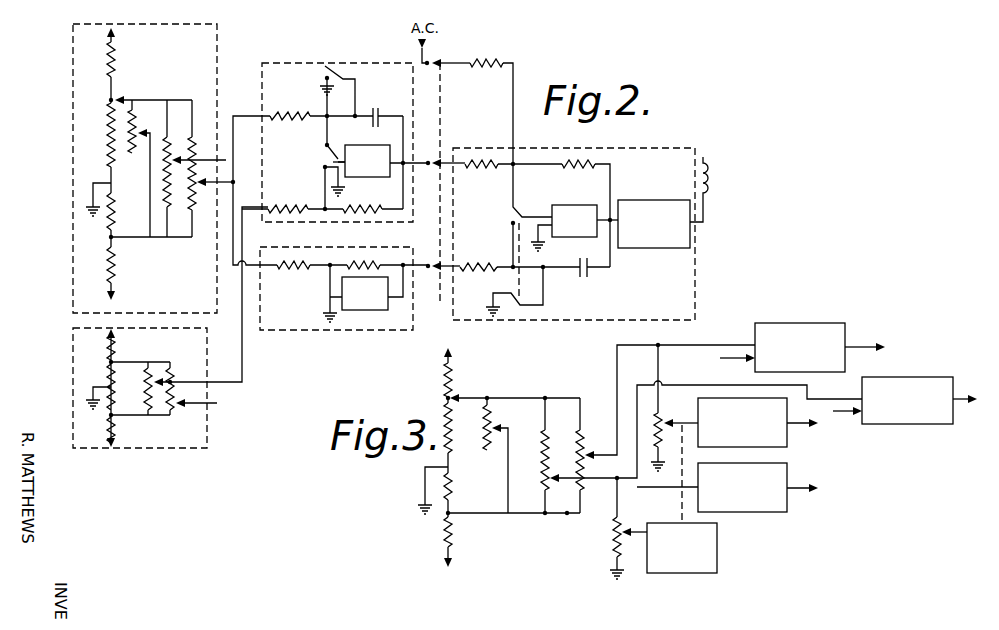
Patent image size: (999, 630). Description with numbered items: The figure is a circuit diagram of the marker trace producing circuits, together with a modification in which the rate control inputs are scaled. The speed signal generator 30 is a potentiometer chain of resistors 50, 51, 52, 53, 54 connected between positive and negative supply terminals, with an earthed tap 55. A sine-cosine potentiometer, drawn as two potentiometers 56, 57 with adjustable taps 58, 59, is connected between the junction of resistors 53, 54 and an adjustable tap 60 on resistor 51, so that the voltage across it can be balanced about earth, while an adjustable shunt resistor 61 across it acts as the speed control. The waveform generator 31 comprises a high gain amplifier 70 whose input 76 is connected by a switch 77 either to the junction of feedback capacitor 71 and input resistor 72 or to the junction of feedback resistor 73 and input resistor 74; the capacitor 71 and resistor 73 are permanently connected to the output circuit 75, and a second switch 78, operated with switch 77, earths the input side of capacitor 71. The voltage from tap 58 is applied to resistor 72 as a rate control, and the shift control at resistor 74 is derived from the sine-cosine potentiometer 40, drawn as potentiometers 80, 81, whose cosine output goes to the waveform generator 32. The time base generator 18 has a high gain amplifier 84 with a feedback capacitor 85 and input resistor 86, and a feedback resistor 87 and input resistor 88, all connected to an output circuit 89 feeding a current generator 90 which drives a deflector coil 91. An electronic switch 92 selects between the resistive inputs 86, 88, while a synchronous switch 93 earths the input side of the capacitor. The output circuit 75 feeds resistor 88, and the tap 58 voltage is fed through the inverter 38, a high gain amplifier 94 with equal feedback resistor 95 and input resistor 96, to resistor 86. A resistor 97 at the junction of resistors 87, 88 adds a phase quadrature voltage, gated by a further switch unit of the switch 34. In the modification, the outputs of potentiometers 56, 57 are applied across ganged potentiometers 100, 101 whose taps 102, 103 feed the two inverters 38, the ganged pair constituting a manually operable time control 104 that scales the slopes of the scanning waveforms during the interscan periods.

In FIG. 2, the time base generator 18 is at (566, 148).
In FIG. 2, the speed signal generator 30 is at (217, 47).
In FIG. 2, the waveform generator 31 is at (352, 63).
In FIG. 3, the waveform generator 31 is at (841, 333).
In FIG. 3, the waveform generator 32 is at (894, 377).
In FIG. 2, the switch 34 is at (436, 62).
In FIG. 2, the inverter 38 is at (368, 332).
In FIG. 3, the inverter 38 is at (796, 448).
In FIG. 2, the sine-cosine potentiometer 40 is at (207, 372).
In FIG. 2, the resistor 50 is at (115, 63).
In FIG. 3, the resistor 50 is at (444, 380).
In FIG. 2, the resistor 51 is at (110, 99).
In FIG. 3, the resistor 51 is at (446, 405).
In FIG. 2, the resistor 52 is at (108, 145).
In FIG. 3, the resistor 52 is at (445, 450).
In FIG. 2, the resistor 53 is at (113, 215).
In FIG. 3, the resistor 53 is at (453, 487).
In FIG. 2, the resistor 54 is at (113, 265).
In FIG. 3, the resistor 54 is at (453, 535).
In FIG. 2, the ground connection 55 is at (93, 200).
In FIG. 2, the potentiometer 56 is at (190, 214).
In FIG. 3, the potentiometer 56 is at (586, 462).
In FIG. 2, the potentiometer 57 is at (165, 212).
In FIG. 3, the potentiometer 57 is at (546, 440).
In FIG. 2, the adjustable tap 58 is at (204, 186).
In FIG. 3, the adjustable tap 58 is at (604, 453).
In FIG. 2, the adjustable tap 59 is at (177, 158).
In FIG. 3, the adjustable tap 59 is at (567, 478).
In FIG. 2, the adjustable tap 60 is at (125, 99).
In FIG. 3, the adjustable tap 60 is at (460, 397).
In FIG. 2, the adjustable shunt resistor 61 is at (136, 114).
In FIG. 3, the adjustable shunt resistor 61 is at (498, 426).
In FIG. 2, the high gain amplifier 70 is at (379, 145).
In FIG. 2, the feedback capacitor 71 is at (374, 108).
In FIG. 2, the input resistor 72 is at (287, 112).
In FIG. 2, the feedback resistor 73 is at (357, 210).
In FIG. 2, the input resistor 74 is at (290, 204).
In FIG. 2, the output circuit 75 is at (403, 161).
In FIG. 2, the input 76 is at (345, 139).
In FIG. 2, the switch 77 is at (333, 162).
In FIG. 2, the second switch 78 is at (334, 66).
In FIG. 2, the potentiometer 80 is at (156, 398).
In FIG. 2, the potentiometer 81 is at (179, 408).
In FIG. 2, the high gain amplifier 84 is at (584, 205).
In FIG. 2, the capacitor 85 is at (588, 278).
In FIG. 2, the input resistor 86 is at (478, 261).
In FIG. 2, the feedback resistor 87 is at (584, 160).
In FIG. 2, the input resistor 88 is at (486, 157).
In FIG. 2, the output circuit 89 is at (612, 219).
In FIG. 2, the current generator 90 is at (660, 200).
In FIG. 2, the deflector coil 91 is at (709, 172).
In FIG. 2, the electronic switch 92 is at (519, 211).
In FIG. 2, the electronic switch 93 is at (516, 306).
In FIG. 2, the high gain amplifier 94 is at (366, 302).
In FIG. 2, the feedback resistor 95 is at (382, 268).
In FIG. 2, the input resistor 96 is at (295, 270).
In FIG. 2, the resistor 97 is at (483, 67).
In FIG. 3, the ganged potentiometer 100 is at (660, 421).
In FIG. 3, the ganged potentiometer 101 is at (613, 528).
In FIG. 3, the tap 102 is at (687, 415).
In FIG. 3, the tap 103 is at (630, 531).
In FIG. 3, the time control 104 is at (717, 540).